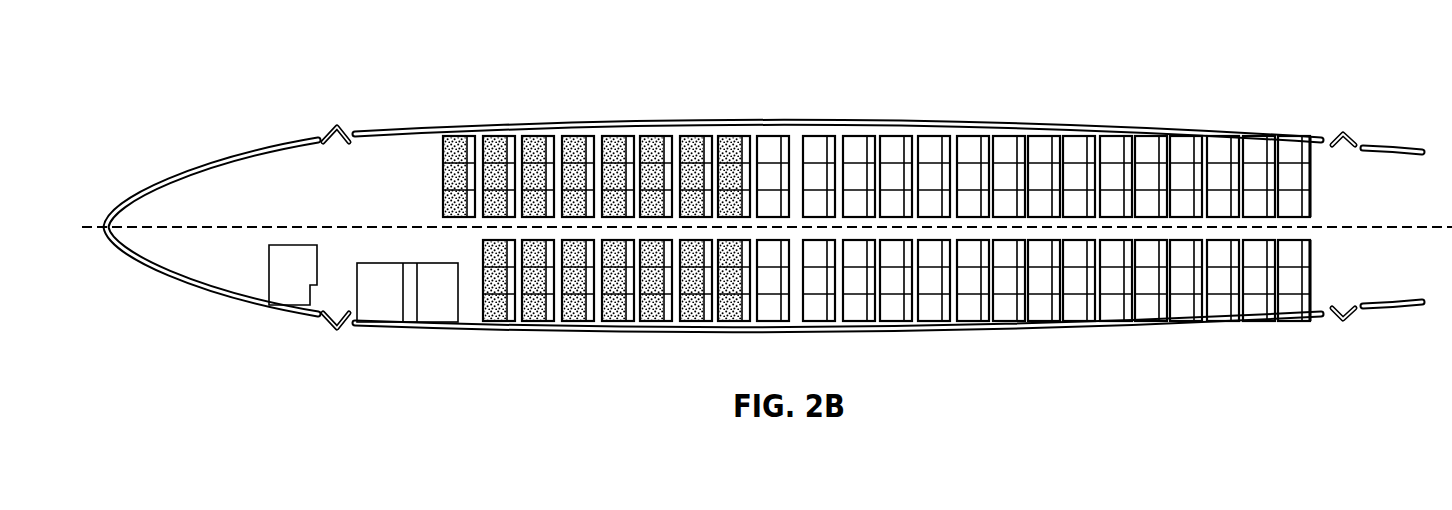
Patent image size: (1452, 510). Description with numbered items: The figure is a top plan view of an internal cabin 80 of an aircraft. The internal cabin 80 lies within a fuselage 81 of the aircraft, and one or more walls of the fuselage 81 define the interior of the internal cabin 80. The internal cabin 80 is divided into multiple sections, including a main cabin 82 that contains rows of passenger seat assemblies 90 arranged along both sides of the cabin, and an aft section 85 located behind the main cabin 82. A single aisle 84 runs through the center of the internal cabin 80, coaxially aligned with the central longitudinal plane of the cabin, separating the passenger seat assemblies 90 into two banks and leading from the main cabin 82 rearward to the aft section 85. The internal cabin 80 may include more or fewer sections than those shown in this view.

The internal cabin 80 is at (356, 68).
The fuselage 81 is at (562, 126).
The main cabin 82 is at (498, 147).
The single aisle 84 is at (893, 222).
The aft section 85 is at (1328, 160).
The passenger seat assemblies 90 is at (772, 152).